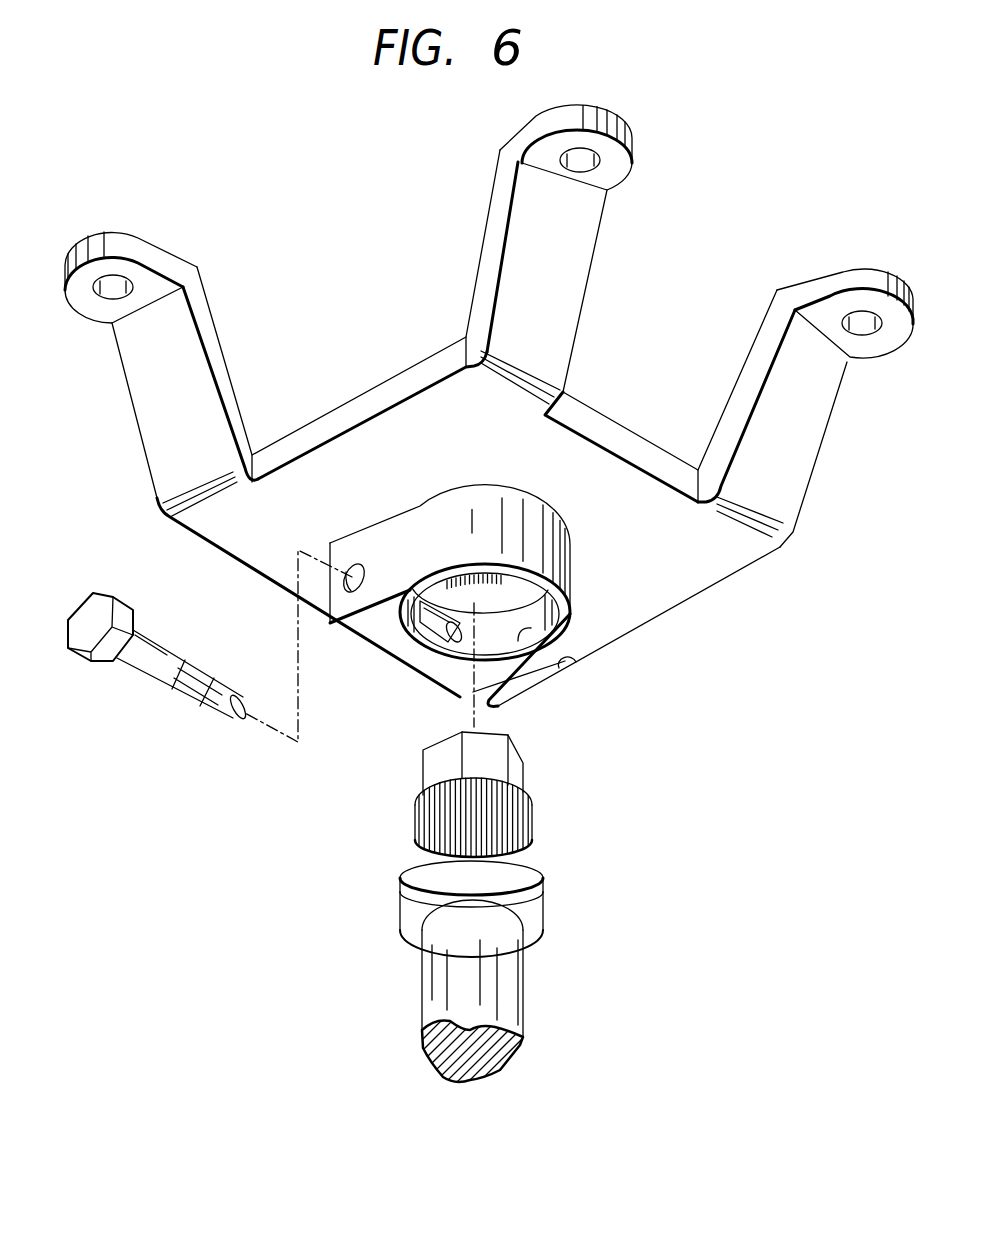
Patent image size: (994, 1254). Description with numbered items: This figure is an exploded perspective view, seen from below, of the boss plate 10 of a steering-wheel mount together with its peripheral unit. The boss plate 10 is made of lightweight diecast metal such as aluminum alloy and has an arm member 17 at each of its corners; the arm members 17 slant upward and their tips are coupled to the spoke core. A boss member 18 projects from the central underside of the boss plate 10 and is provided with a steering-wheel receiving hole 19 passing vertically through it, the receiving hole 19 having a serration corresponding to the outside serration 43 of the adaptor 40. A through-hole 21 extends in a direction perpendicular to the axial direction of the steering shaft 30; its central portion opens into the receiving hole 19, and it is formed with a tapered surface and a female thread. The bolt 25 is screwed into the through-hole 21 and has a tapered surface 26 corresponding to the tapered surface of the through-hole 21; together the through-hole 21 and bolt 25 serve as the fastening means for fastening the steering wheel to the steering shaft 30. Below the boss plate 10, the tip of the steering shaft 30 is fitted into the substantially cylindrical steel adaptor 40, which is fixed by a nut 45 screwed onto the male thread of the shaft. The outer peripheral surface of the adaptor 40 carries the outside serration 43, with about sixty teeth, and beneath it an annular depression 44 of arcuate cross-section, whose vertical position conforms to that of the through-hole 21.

The boss plate 10 is at (688, 578).
The arm member 17 is at (218, 352).
The boss member 18 is at (560, 548).
The steering-wheel receiving hole 19 is at (521, 642).
The through-hole 21 is at (353, 590).
The bolt 25 is at (128, 665).
The tapered surface 26 is at (175, 687).
The steering shaft 30 is at (508, 988).
The adaptor 40 is at (543, 907).
The outside serration 43 is at (532, 823).
The annular depression 44 is at (400, 879).
The nut 45 is at (524, 772).